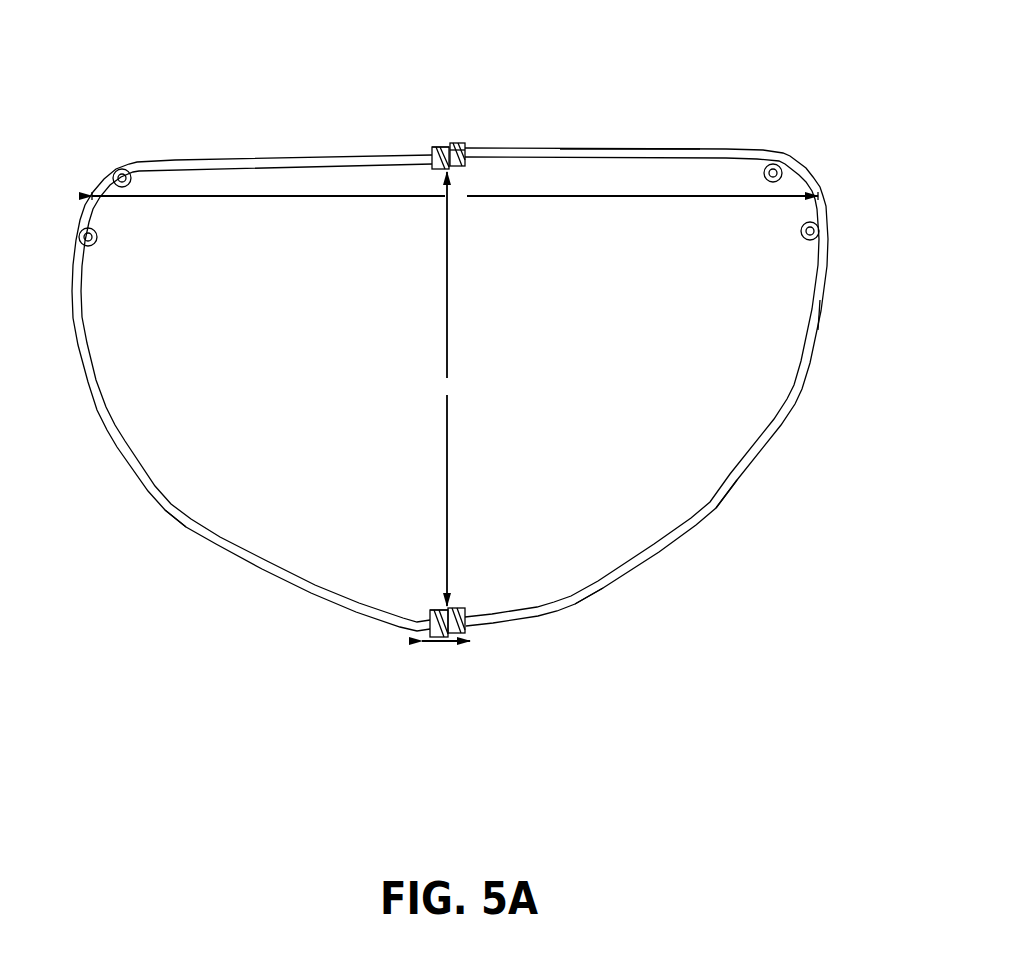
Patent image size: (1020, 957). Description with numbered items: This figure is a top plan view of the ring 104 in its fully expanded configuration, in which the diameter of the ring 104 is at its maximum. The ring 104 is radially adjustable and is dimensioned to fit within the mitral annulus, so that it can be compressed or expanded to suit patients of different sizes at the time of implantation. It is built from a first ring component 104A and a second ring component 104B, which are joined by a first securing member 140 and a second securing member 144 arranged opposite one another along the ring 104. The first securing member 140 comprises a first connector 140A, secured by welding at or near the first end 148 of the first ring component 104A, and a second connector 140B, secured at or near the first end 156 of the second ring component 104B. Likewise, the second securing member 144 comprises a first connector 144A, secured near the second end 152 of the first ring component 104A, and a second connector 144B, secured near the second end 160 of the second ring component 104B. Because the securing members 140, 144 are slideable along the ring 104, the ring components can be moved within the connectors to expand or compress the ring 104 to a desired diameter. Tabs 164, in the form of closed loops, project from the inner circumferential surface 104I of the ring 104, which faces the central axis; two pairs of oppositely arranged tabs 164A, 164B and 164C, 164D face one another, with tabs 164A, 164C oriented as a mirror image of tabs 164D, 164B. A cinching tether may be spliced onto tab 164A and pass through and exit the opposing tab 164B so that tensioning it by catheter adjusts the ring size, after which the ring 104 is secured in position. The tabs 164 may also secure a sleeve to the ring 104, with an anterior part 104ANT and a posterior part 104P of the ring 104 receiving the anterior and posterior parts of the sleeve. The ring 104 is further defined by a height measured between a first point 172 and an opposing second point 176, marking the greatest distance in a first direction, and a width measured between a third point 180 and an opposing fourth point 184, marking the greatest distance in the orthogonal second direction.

The ring 104 is at (222, 112).
The anterior part of the ring 104ANT is at (622, 154).
The inner circumferential surface of the ring 104I is at (812, 322).
The first ring component 104A is at (181, 525).
The second ring component 104B is at (735, 490).
The posterior part of the ring 104P is at (597, 585).
The first securing member 140 is at (421, 109).
The first connector of the first securing member 140A is at (436, 160).
The second connector of the first securing member 140B is at (456, 150).
The first end of the second ring component 156 is at (437, 150).
The first end of the first ring component 148 is at (462, 158).
The second securing member 144 is at (439, 632).
The first connector of the second securing member 144A is at (430, 633).
The second connector of the second securing member 144B is at (458, 612).
The second end of the second ring component 160 is at (436, 611).
The second end of the first ring component 152 is at (468, 641).
The tabs 164 is at (448, 244).
The first tab 164A is at (86, 246).
The second tab 164B is at (801, 232).
The third tab 164C is at (122, 168).
The fourth tab 164D is at (780, 170).
The first point 172 is at (455, 203).
The second point 176 is at (458, 600).
The third point 180 is at (93, 193).
The fourth point 184 is at (822, 196).